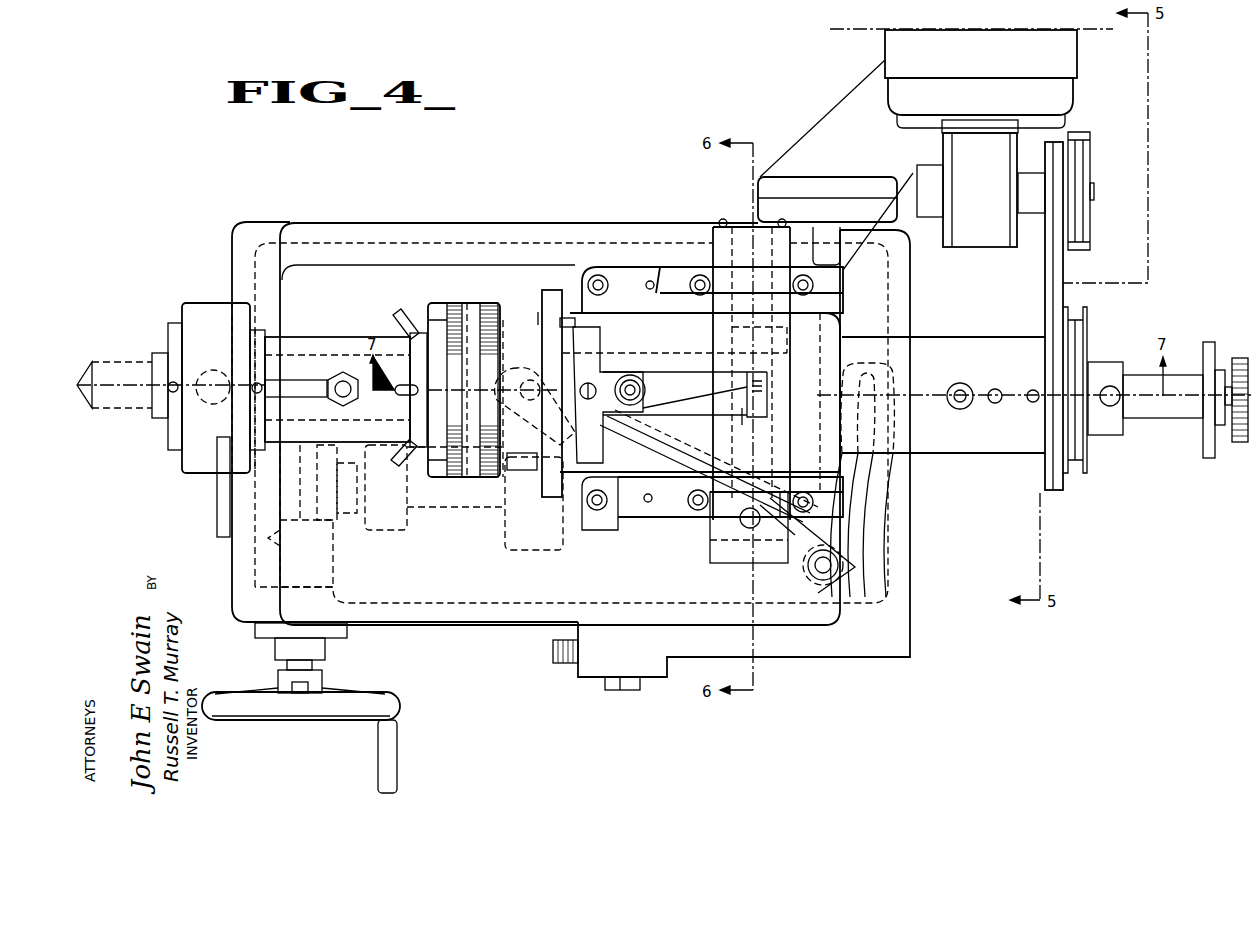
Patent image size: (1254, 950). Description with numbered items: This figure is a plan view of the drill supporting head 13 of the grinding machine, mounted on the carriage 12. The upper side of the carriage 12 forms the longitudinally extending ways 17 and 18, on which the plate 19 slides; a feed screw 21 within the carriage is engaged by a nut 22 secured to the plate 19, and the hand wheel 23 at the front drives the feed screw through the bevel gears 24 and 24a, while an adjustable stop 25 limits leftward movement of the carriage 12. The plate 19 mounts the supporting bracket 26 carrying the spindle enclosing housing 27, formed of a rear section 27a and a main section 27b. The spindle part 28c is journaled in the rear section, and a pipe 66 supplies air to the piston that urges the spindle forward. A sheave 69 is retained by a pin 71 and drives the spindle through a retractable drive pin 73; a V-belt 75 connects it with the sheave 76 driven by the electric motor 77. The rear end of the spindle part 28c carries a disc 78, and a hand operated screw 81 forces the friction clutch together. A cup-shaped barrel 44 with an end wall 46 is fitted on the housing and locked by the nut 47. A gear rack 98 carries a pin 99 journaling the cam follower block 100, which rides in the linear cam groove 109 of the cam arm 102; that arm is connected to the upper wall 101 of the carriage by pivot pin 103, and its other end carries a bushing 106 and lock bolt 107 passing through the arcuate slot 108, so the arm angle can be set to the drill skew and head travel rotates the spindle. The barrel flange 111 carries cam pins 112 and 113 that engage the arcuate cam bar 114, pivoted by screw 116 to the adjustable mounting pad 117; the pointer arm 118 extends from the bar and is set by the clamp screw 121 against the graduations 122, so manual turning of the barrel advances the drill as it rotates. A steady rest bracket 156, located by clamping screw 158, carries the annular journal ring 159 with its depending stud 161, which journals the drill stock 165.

The carriage 12 is at (392, 208).
The drill supporting head 13 is at (458, 303).
The longitudinally extending way 17 is at (240, 597).
The longitudinally extending way 18 is at (278, 303).
The plate 19 is at (384, 622).
The feed screw 21 is at (418, 516).
The nut 22 is at (505, 540).
The hand wheel 23 is at (375, 693).
The bevel gear 24 is at (335, 535).
The bevel gear 24a is at (336, 556).
The adjustable stop 25 is at (570, 665).
The supporting bracket 26 is at (620, 276).
The spindle enclosing housing 27 is at (660, 300).
The rear section of housing 27a is at (970, 345).
The main section of housing 27b is at (607, 325).
The spindle part 28c is at (1163, 418).
The cup-shaped shell or barrel 44 is at (485, 305).
The end wall 46 is at (427, 316).
The locking nut 47 is at (395, 332).
The pipe 66 is at (958, 410).
The sheave 69 is at (1080, 328).
The pin 71 is at (1032, 403).
The retractable drive pin 73 is at (1110, 385).
The V-belt 75 is at (1044, 291).
The sheave 76 is at (1092, 168).
The electric motor 77 is at (885, 50).
The disc 78 is at (1208, 342).
The hand operated screw 81 is at (1240, 360).
The gear rack 98 is at (777, 456).
The pin 99 is at (712, 538).
The cam follower block 100 is at (786, 492).
The upper wall of carriage 101 is at (905, 553).
The cam arm 102 is at (683, 444).
The pivot pin 103 is at (523, 370).
The bushing 106 is at (800, 578).
The lock bolt 107 is at (818, 600).
The arcuate slot 108 is at (870, 508).
The linear cam groove 109 is at (659, 434).
The flange 111 is at (554, 289).
The cam pin 112 is at (535, 472).
The cam pin 113 is at (538, 314).
The arcuate cam bar 114 is at (594, 357).
The screw 116 is at (594, 388).
The adjustable mounting pad 117 is at (751, 427).
The pointer arm 118 is at (672, 372).
The clamp screw 121 is at (631, 375).
The graduations 122 is at (767, 392).
The bracket 156 is at (312, 340).
The clamping screw 158 is at (330, 384).
The annular journal ring 159 is at (205, 292).
The depending stud 161 is at (208, 400).
The drill stock 165 is at (155, 353).